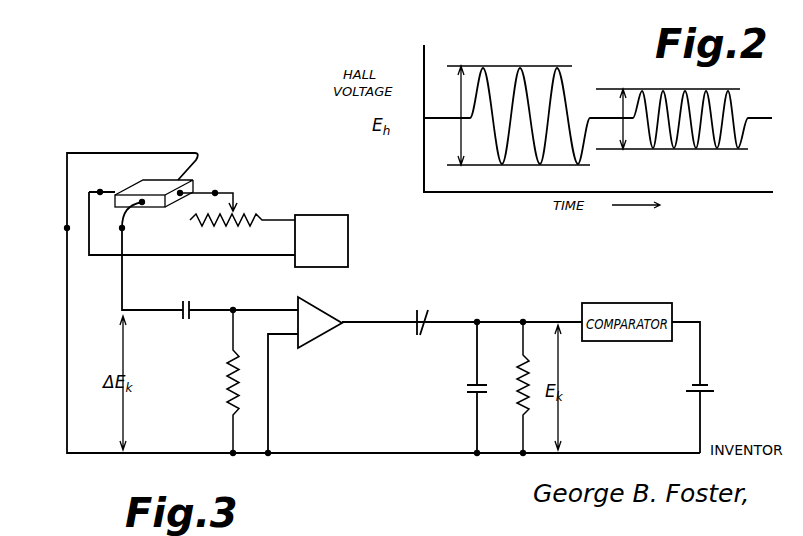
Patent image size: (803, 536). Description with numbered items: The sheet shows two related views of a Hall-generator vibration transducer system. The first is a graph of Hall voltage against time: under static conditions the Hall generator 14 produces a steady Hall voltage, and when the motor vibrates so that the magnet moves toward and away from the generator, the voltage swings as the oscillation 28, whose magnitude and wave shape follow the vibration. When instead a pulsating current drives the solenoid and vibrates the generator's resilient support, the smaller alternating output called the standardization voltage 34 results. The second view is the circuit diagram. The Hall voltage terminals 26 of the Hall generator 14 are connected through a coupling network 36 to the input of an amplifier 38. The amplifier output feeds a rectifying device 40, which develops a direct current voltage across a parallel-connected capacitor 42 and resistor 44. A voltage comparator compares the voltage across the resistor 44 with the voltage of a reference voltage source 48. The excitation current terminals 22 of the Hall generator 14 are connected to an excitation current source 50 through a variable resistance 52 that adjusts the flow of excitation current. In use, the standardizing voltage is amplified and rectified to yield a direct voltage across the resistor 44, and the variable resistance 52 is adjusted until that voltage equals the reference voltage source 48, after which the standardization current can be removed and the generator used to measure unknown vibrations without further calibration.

In FIG. 3, the Hall generator 14 is at (193, 182).
In FIG. 3, the excitation current terminals 22 is at (100, 191).
In FIG. 3, the Hall voltage terminals 26 is at (67, 227).
In FIG. 2, the Hall voltage variation 28 is at (488, 76).
In FIG. 2, the standardization voltage 34 is at (697, 150).
In FIG. 3, the coupling network 36 is at (223, 357).
In FIG. 3, the amplifier 38 is at (320, 318).
In FIG. 3, the rectifying device 40 is at (420, 308).
In FIG. 3, the capacitor 42 is at (467, 387).
In FIG. 3, the resistor 44 is at (518, 378).
In FIG. 3, the reference voltage source 48 is at (710, 388).
In FIG. 3, the excitation current source 50 is at (340, 215).
In FIG. 3, the variable resistance 52 is at (245, 214).